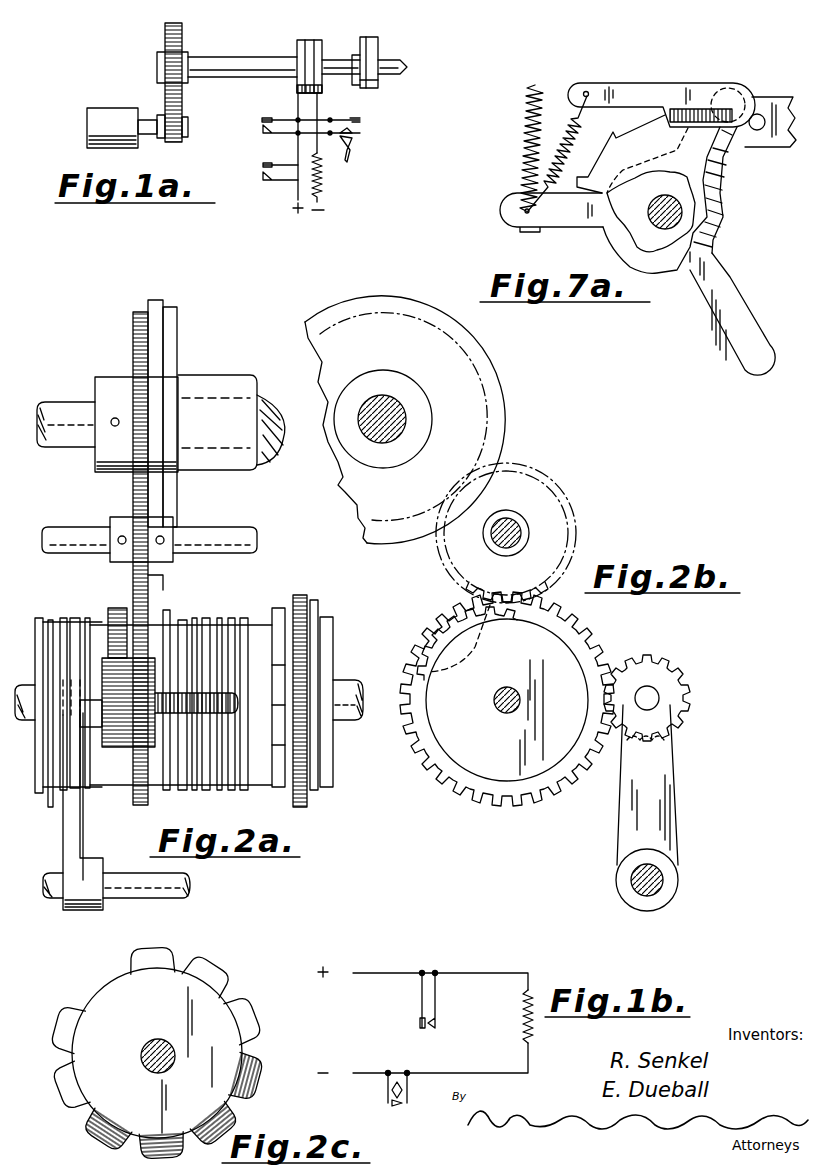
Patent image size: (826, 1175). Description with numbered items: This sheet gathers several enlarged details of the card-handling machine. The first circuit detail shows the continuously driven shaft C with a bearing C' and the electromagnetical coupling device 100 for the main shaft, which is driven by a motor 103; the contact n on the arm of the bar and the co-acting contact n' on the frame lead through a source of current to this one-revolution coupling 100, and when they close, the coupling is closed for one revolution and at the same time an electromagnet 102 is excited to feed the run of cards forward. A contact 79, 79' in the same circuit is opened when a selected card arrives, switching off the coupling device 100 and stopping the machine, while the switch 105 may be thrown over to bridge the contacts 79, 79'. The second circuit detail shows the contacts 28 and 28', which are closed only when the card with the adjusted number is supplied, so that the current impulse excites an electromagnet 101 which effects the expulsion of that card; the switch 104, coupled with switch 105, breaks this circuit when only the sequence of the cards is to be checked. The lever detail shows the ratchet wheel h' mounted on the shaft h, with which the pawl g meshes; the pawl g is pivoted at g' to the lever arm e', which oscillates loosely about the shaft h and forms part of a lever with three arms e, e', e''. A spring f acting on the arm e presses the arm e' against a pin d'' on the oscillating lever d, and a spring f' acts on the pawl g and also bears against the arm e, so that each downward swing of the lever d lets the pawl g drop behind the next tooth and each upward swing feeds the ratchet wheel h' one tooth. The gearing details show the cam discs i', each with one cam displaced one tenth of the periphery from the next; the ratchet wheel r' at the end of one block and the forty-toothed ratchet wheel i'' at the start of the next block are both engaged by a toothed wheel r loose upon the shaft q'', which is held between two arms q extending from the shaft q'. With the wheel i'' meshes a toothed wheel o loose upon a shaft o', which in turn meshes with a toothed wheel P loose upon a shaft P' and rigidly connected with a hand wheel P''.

In FIG. 1A, the electromagnetical coupling device 100 is at (312, 50).
In FIG. 1A, the motor 103 is at (108, 118).
In FIG. 1A, the contact 79 is at (265, 105).
In FIG. 1A, the contact 79' is at (259, 135).
In FIG. 1A, the contact n is at (259, 172).
In FIG. 1A, the co-acting contact n' is at (263, 190).
In FIG. 1A, the electromagnet 102 is at (322, 172).
In FIG. 1A, the switch 105 is at (350, 140).
In FIG. 1A, the shaft C is at (406, 51).
In FIG. 1A, the bearing C' is at (377, 79).
In FIG. 7A, the pawl g is at (661, 90).
In FIG. 7A, the pivot g' is at (728, 84).
In FIG. 7A, the lever d is at (770, 140).
In FIG. 7A, the pin d'' is at (772, 88).
In FIG. 7A, the spring f is at (514, 148).
In FIG. 7A, the spring f' is at (565, 153).
In FIG. 7A, the lever arm e is at (543, 203).
In FIG. 7A, the lever arm e' is at (725, 190).
In FIG. 7A, the lever arm e'' is at (741, 314).
In FIG. 7A, the shaft h is at (659, 201).
In FIG. 2A, the shaft h is at (352, 675).
In FIG. 2B, the shaft h is at (490, 700).
In FIG. 2C, the shaft h is at (137, 1056).
In FIG. 7A, the ratchet wheel h' is at (669, 197).
In FIG. 2A, the toothed wheel P is at (120, 558).
In FIG. 2B, the toothed wheel P is at (400, 417).
In FIG. 2A, the shaft P' is at (161, 414).
In FIG. 2B, the shaft P' is at (399, 419).
In FIG. 2A, the hand wheel P'' is at (190, 413).
In FIG. 2B, the hand wheel P'' is at (426, 417).
In FIG. 2A, the toothed wheel o is at (168, 584).
In FIG. 2B, the toothed wheel o is at (522, 533).
In FIG. 2A, the shaft o' is at (149, 553).
In FIG. 2B, the shaft o' is at (519, 526).
In FIG. 2A, the toothed wheel r is at (128, 738).
In FIG. 2B, the toothed wheel r is at (664, 745).
In FIG. 2A, the ratchet wheel r' is at (103, 625).
In FIG. 2B, the ratchet wheel r' is at (466, 638).
In FIG. 2A, the cam disc i' is at (200, 699).
In FIG. 2A, the ratchet wheel i'' is at (251, 693).
In FIG. 2B, the ratchet wheel i'' is at (513, 699).
In FIG. 2C, the ratchet wheel i'' is at (157, 1041).
In FIG. 2A, the arm q is at (64, 795).
In FIG. 2B, the arm q is at (663, 808).
In FIG. 2A, the shaft q' is at (116, 899).
In FIG. 2B, the shaft q' is at (634, 896).
In FIG. 2A, the shaft q'' is at (236, 635).
In FIG. 2B, the shaft q'' is at (669, 698).
In FIG. 1B, the contact 28 is at (404, 1005).
In FIG. 1B, the contact 28' is at (450, 1005).
In FIG. 1B, the electromagnet 101 is at (522, 1042).
In FIG. 1B, the switch 104 is at (393, 1106).